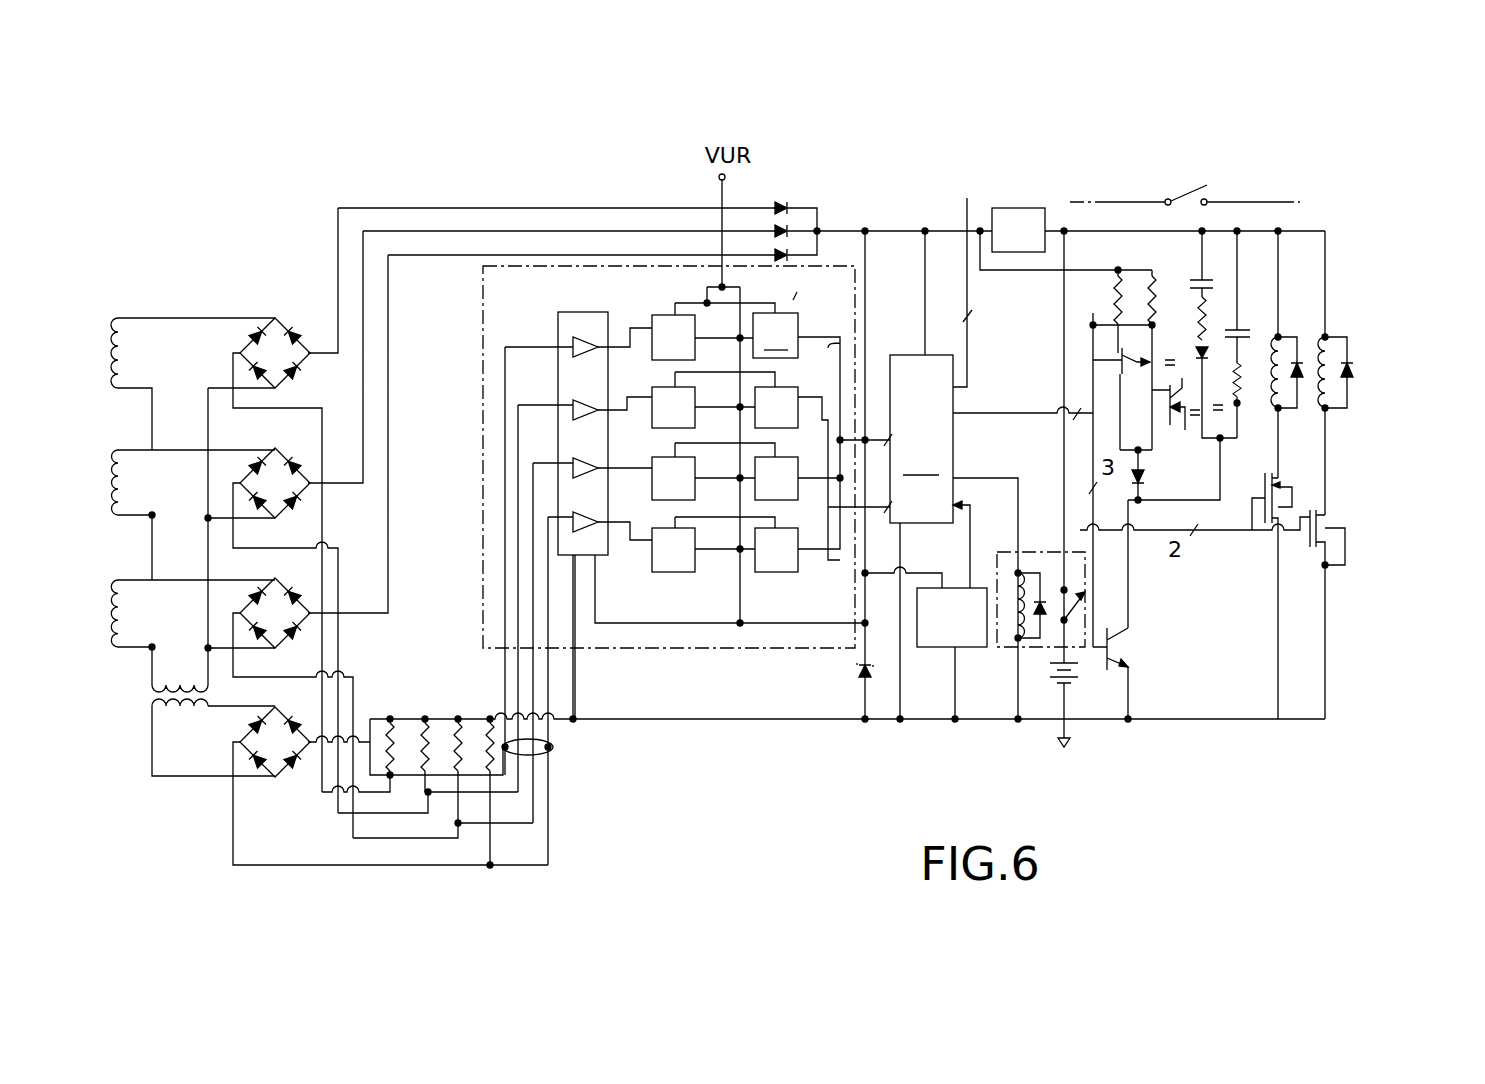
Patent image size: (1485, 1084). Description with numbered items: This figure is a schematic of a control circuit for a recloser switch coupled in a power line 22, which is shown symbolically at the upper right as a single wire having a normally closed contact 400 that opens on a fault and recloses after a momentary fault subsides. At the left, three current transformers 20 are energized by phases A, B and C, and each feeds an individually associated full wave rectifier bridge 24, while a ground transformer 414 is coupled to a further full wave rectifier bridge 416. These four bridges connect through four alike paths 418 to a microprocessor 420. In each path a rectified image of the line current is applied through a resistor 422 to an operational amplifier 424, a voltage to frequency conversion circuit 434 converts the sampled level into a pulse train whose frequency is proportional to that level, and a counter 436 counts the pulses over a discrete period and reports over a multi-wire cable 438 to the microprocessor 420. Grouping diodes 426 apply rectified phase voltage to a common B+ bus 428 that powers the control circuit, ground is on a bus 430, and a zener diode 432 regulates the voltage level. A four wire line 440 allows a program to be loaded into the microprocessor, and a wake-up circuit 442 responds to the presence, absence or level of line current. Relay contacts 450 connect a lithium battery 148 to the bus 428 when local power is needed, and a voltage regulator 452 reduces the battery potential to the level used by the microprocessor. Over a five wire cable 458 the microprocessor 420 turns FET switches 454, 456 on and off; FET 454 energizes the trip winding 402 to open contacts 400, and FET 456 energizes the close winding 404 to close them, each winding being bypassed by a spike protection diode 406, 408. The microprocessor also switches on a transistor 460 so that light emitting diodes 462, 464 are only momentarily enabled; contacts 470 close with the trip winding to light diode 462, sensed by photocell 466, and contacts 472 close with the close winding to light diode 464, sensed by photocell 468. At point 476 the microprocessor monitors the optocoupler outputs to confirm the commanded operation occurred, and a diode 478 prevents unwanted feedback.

The current transformers 20 is at (164, 310).
The full wave bridge rectifiers 24 is at (284, 312).
The ground transformer 414 is at (160, 693).
The full wave rectifier bridge 416 is at (252, 722).
The resistor 422 is at (392, 734).
The operational amplifier 424 is at (560, 325).
The voltage to frequency conversion circuit 434 is at (655, 315).
The counter 436 is at (798, 438).
The grouping diode 426 is at (778, 210).
The paths 418 is at (655, 652).
The ground bus 430 is at (702, 717).
The zener diode 432 is at (872, 672).
The multi-wire cable 438 is at (890, 402).
The microprocessor 420 is at (921, 375).
The four wire line 440 is at (967, 198).
The voltage regulator 452 is at (1025, 208).
The five wire cable 458 is at (984, 412).
The wake-up circuit 442 is at (940, 658).
The relay contacts 450 is at (1080, 587).
The lithium battery 148 is at (1055, 680).
The contact 400 is at (1190, 185).
The line 22 is at (1108, 200).
The common bus 428 is at (1087, 266).
The monitoring point 476 is at (1088, 320).
The photocell 466 is at (1090, 345).
The photocell 468 is at (1161, 461).
The diode 478 is at (1148, 483).
The contacts 470 is at (1200, 289).
The light emitting diode 462 is at (1195, 352).
The contacts 472 is at (1240, 330).
The trip winding 402 is at (1260, 333).
The diode 406 is at (1300, 380).
The close winding 404 is at (1323, 357).
The diode 408 is at (1347, 378).
The light emitting diode 464 is at (1282, 478).
The FET switch 454 is at (1235, 500).
The FET switch 456 is at (1330, 503).
The transistor 460 is at (1125, 645).